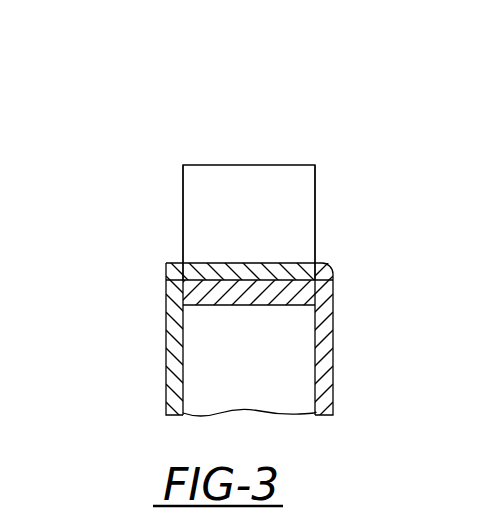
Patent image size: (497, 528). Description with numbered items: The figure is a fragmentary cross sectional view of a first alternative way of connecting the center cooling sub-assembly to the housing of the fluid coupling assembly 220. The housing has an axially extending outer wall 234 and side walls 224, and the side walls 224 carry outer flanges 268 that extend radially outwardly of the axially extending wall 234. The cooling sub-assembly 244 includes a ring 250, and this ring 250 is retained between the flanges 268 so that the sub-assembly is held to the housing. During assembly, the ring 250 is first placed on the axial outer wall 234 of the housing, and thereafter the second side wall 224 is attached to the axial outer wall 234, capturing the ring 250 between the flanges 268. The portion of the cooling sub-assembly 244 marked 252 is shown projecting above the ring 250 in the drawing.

The fluid coupling assembly 220 is at (250, 266).
The cooling sub-assembly 244 is at (228, 296).
The upper portion of plug 252 is at (292, 175).
The ring 250 is at (270, 272).
The outer flanges 268 is at (175, 282).
The side walls 224 is at (175, 360).
The axially extending wall 234 is at (246, 300).